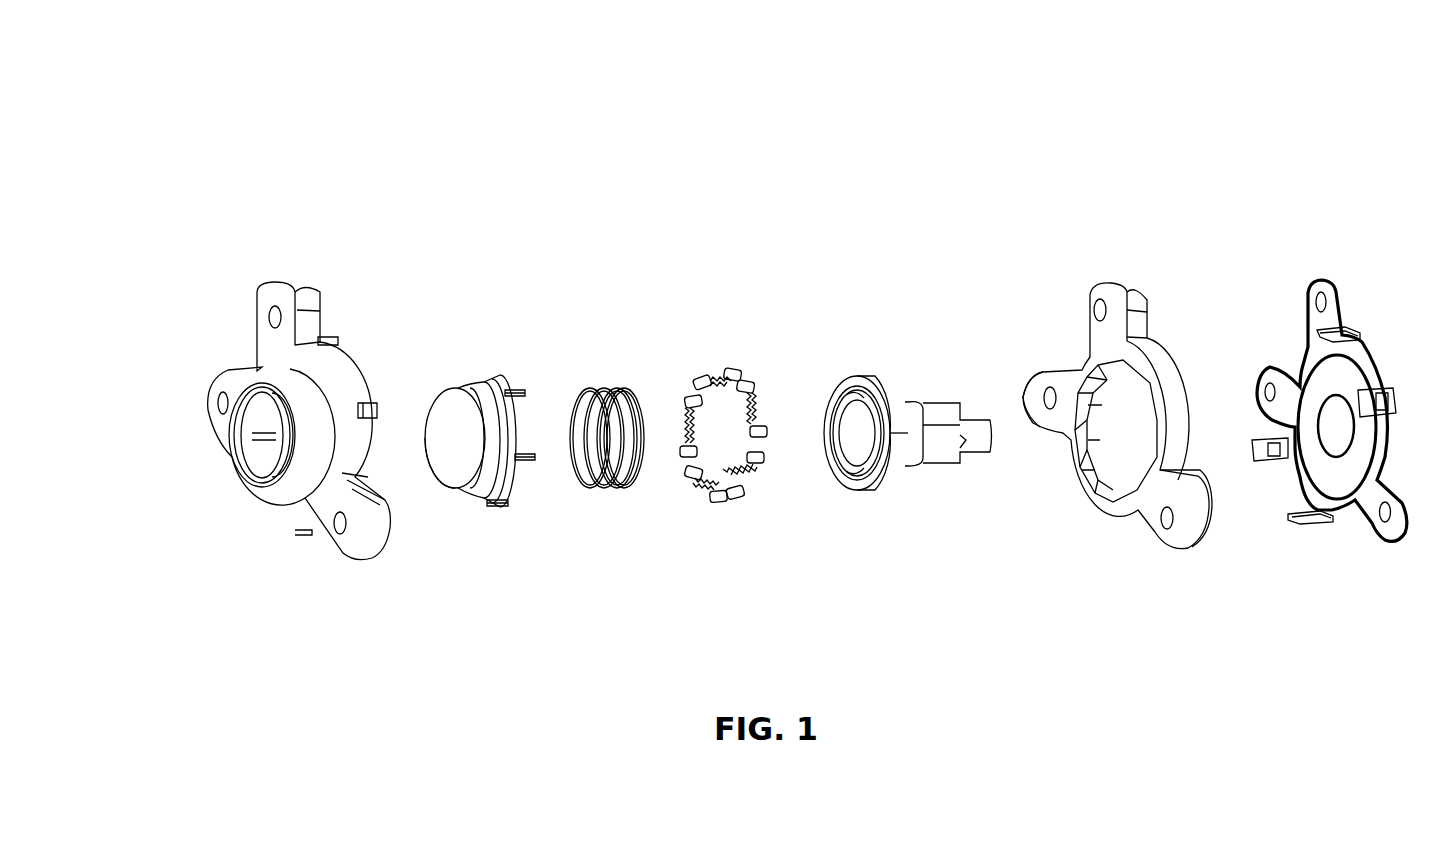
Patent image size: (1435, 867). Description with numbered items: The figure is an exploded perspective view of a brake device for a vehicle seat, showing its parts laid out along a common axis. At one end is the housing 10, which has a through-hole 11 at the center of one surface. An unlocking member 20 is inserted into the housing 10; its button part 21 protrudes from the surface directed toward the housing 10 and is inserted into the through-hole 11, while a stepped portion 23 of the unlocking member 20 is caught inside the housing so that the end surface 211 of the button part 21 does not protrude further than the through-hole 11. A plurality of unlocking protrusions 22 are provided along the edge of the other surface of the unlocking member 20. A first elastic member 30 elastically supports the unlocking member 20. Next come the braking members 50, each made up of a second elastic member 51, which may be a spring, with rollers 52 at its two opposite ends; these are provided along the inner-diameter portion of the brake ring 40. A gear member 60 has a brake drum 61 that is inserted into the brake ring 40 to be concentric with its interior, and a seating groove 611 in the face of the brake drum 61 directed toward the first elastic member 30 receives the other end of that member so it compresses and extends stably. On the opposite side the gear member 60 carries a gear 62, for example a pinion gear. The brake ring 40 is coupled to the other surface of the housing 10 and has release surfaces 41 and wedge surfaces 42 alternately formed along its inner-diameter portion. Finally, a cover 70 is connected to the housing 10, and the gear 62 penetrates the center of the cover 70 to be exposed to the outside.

The housing 10 is at (244, 346).
The through-hole 11 is at (238, 451).
The unlocking member 20 is at (458, 421).
The button part 21 is at (446, 430).
The end surface of the button part 211 is at (447, 487).
The unlocking protrusions 22 is at (510, 391).
The stepped portion 23 is at (463, 393).
The first elastic member 30 is at (607, 388).
The braking members 50 is at (756, 375).
The second elastic member 51 is at (758, 405).
The rollers 52 is at (742, 378).
The gear member 60 is at (894, 411).
The brake drum 61 is at (877, 385).
The seating groove 611 is at (852, 480).
The gear 62 is at (944, 410).
The brake ring 40 is at (1113, 354).
The release surfaces 41 is at (1068, 440).
The wedge surfaces 42 is at (1093, 422).
The cover 70 is at (1307, 272).